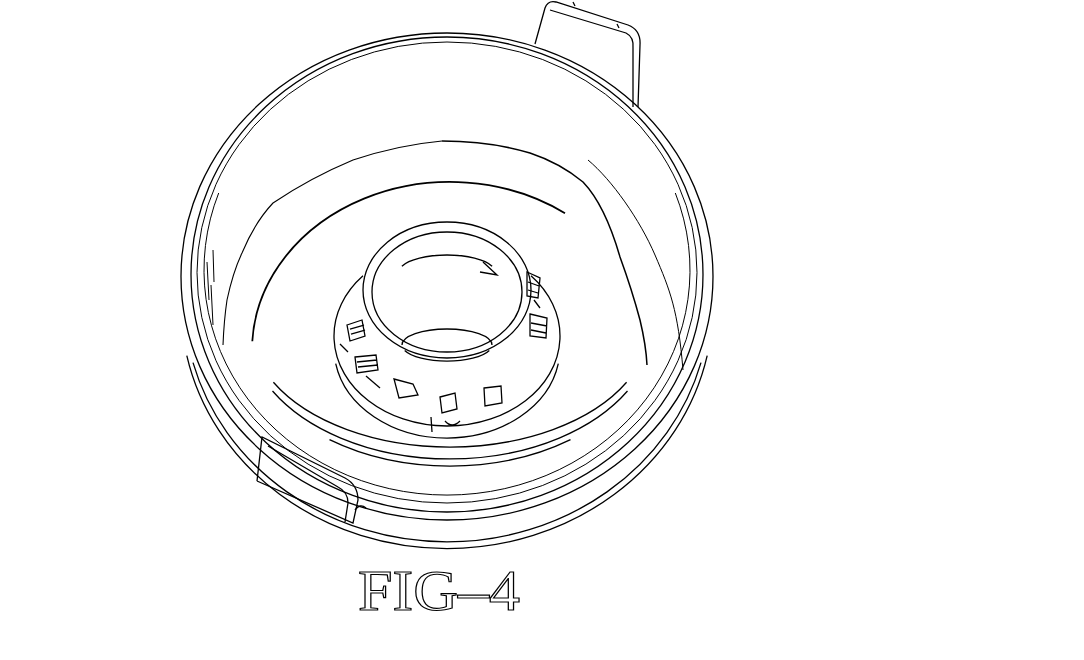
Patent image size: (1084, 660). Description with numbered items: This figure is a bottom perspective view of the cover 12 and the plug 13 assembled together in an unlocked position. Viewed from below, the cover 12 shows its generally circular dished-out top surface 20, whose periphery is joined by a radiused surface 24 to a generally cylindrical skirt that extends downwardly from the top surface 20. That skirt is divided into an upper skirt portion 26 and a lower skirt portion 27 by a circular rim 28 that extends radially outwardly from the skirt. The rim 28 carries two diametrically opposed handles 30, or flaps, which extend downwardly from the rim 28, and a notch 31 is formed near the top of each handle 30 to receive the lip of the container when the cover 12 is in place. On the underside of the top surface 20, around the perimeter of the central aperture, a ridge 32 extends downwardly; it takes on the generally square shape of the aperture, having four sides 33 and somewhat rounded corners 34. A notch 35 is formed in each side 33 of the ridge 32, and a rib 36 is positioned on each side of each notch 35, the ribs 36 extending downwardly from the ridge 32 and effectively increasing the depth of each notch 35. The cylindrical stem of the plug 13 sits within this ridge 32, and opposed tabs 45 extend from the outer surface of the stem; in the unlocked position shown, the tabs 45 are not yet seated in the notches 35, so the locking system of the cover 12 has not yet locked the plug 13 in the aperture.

The cover 12 is at (200, 172).
The plug 13 is at (437, 206).
The top surface 20 is at (523, 212).
The radiused surface 24 is at (513, 163).
The upper skirt portion 26 is at (575, 500).
The lower skirt portion 27 is at (272, 147).
The circular rim 28 is at (525, 496).
The handles 30 is at (632, 32).
The notch 31 is at (367, 508).
The ridge 32 is at (575, 381).
The sides 33 is at (453, 425).
The rounded corners 34 is at (552, 328).
The notch 35 is at (540, 307).
The rib 36 is at (532, 268).
The tabs 45 is at (372, 382).